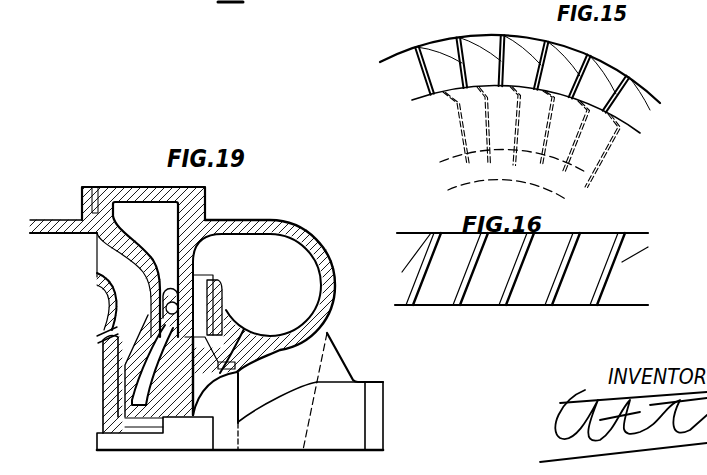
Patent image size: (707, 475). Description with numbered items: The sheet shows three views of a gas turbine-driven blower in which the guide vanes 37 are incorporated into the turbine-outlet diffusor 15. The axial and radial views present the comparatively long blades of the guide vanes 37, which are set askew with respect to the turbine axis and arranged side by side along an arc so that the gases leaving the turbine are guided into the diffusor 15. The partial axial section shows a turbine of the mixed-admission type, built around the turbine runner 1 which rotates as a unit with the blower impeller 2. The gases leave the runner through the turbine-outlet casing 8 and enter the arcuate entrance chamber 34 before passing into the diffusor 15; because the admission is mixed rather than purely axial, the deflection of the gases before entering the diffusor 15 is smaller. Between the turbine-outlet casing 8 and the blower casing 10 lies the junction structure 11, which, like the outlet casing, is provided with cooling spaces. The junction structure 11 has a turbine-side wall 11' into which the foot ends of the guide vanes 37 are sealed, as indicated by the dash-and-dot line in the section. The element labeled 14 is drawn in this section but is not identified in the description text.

In FIG. 15, the guide vanes 37 is at (482, 53).
In FIG. 16, the guide vanes 37 is at (483, 282).
In FIG. 19, the guide vanes 37 is at (105, 248).
In FIG. 19, the turbine-outlet casing 8 is at (63, 222).
In FIG. 19, the junction structure 11 is at (143, 192).
In FIG. 19, the turbine-side wall 11' is at (137, 269).
In FIG. 19, the blower casing 10 is at (334, 289).
In FIG. 19, the diffusor 15 is at (127, 285).
In FIG. 19, the arcuate entrance chamber 34 is at (110, 323).
In FIG. 19, the side wall 14 is at (110, 362).
In FIG. 19, the turbine runner 1 is at (102, 434).
In FIG. 19, the blower impeller 2 is at (200, 437).